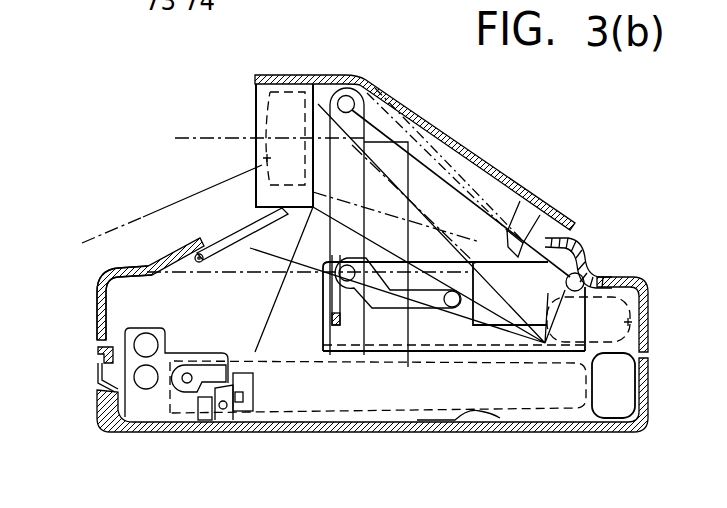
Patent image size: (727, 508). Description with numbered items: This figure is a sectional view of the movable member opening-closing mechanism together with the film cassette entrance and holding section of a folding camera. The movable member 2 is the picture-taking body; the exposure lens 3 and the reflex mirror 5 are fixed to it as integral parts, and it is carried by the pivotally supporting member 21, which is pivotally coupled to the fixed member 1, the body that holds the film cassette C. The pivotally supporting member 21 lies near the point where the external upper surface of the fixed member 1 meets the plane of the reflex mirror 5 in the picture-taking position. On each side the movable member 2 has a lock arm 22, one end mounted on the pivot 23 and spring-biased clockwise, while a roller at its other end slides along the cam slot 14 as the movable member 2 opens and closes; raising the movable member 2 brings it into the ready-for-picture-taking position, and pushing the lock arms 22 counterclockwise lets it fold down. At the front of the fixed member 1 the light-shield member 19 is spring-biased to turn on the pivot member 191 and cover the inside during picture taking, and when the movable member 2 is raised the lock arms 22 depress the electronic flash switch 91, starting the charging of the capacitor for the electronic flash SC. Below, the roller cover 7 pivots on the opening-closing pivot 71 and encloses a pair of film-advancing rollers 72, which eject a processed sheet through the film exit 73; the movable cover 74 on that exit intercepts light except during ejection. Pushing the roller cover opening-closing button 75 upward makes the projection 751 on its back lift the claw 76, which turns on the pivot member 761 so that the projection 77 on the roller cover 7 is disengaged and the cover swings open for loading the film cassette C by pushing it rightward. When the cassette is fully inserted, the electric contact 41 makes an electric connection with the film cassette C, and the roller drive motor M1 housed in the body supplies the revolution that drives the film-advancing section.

The fixed member 1 is at (650, 373).
The movable member 2 is at (458, 142).
The exposure lens 3 is at (267, 158).
The reflex mirror 5 is at (453, 187).
The roller cover 7 is at (110, 430).
The cam slot 14 is at (390, 300).
The light-shield member 19 is at (254, 222).
The pivotally supporting member 21 is at (584, 277).
The lock arm 22 is at (357, 153).
The pivot 23 is at (355, 97).
The electric contact 41 is at (475, 415).
The opening-closing pivot 71 is at (225, 408).
The film-advancing rollers 72 is at (131, 347).
The film exit 73 is at (90, 373).
The movable cover 74 is at (100, 380).
The roller cover opening-closing button 75 is at (250, 402).
The claw 76 is at (196, 385).
The projection 77 is at (207, 398).
The electronic flash switch 91 is at (332, 310).
The pivot member 191 is at (187, 257).
The projection 751 is at (242, 393).
The pivot member 761 is at (185, 383).
The film cassette C is at (547, 397).
The capacitor for the electronic flash SC is at (632, 322).
The roller drive motor M1 is at (622, 400).